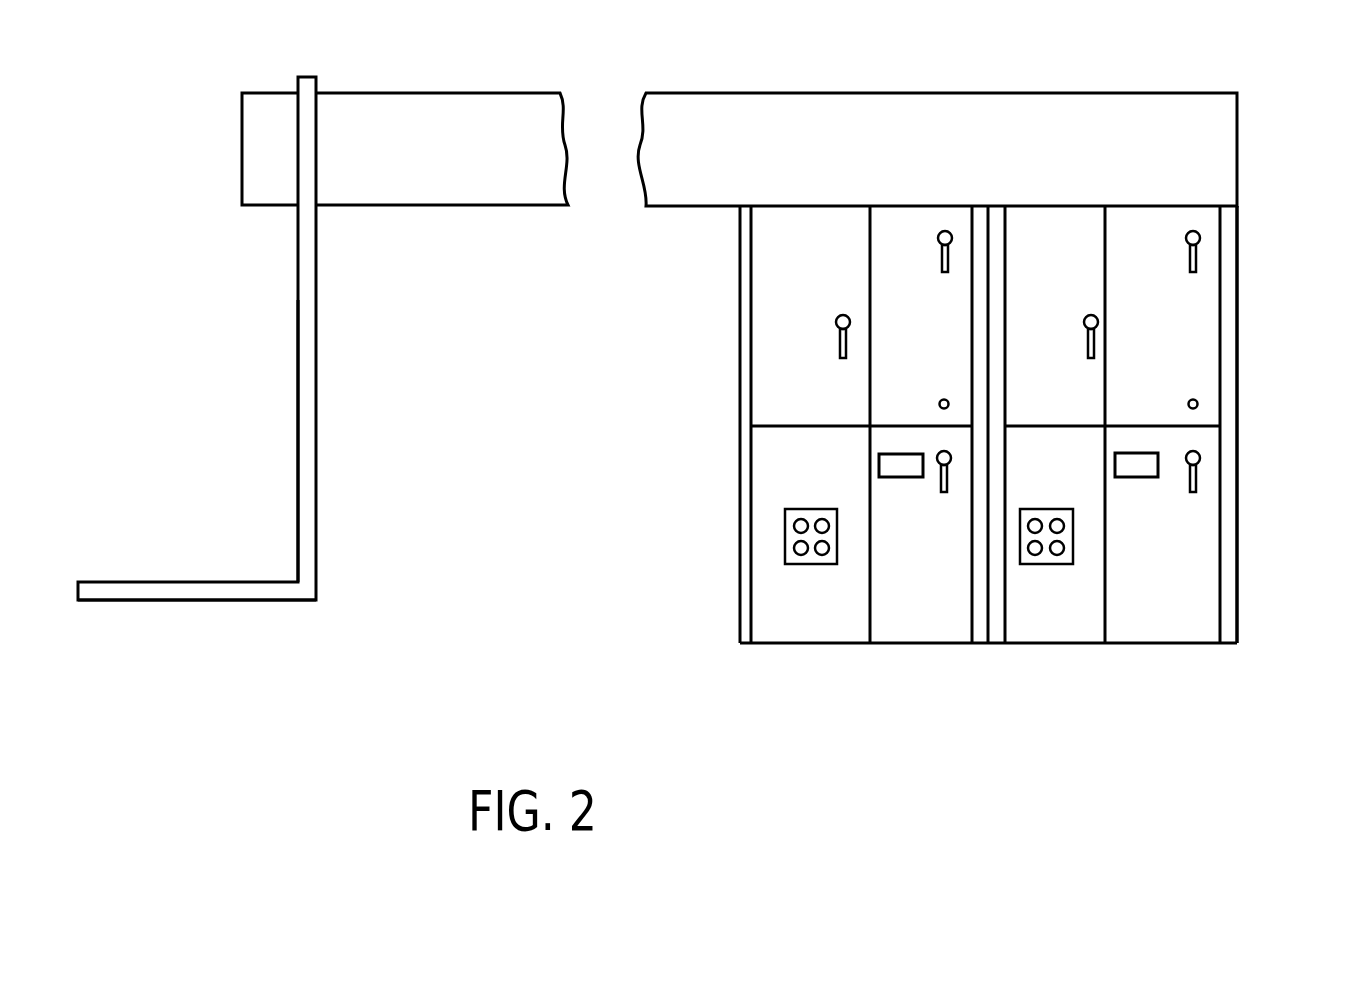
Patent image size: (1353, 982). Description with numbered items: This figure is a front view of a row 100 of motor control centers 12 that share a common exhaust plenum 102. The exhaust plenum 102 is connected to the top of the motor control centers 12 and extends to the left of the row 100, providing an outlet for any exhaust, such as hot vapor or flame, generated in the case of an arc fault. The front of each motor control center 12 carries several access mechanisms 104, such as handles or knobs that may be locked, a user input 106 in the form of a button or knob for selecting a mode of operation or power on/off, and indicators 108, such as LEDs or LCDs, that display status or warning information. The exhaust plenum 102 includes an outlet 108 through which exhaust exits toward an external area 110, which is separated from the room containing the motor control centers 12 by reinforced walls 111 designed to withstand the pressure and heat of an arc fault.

The row 100 is at (1284, 413).
The exhaust plenum 102 is at (938, 93).
The access mechanisms 104 is at (938, 235).
The user input 106 is at (813, 509).
The indicators / outlet 108 is at (241, 148).
The external area 110 is at (148, 370).
The reinforced walls 111 is at (316, 549).
The motor control centers 12 is at (919, 664).